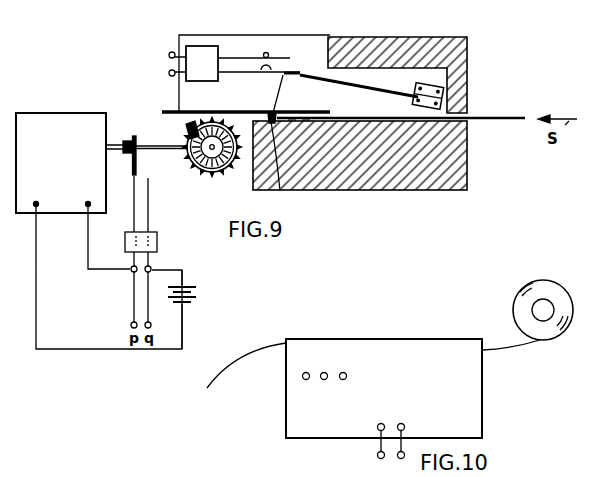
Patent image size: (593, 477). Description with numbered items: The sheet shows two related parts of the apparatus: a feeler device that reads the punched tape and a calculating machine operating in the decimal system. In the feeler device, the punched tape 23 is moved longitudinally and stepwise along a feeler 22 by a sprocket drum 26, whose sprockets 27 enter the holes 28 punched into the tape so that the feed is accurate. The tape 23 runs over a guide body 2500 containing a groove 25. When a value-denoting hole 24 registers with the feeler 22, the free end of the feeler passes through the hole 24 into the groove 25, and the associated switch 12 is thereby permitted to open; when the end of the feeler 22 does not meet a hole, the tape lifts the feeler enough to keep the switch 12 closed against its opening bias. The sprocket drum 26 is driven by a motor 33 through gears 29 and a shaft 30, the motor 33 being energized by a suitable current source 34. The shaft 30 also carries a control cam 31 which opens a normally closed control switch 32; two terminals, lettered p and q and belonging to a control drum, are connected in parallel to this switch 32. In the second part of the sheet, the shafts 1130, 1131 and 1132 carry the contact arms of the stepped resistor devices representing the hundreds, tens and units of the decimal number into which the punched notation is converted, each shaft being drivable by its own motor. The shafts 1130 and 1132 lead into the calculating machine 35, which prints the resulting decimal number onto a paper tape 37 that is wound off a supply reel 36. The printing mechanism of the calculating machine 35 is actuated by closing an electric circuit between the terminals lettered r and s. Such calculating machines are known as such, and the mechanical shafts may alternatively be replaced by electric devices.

In FIG. 9, the switch 12 is at (219, 46).
In FIG. 9, the feeler 22 is at (318, 76).
In FIG. 9, the tape 23 is at (401, 109).
In FIG. 9, the value-denoting hole 24 is at (277, 117).
In FIG. 9, the groove 25 is at (279, 191).
In FIG. 9, the guide body 2500 is at (383, 188).
In FIG. 9, the sprocket drum 26 is at (212, 165).
In FIG. 9, the sprockets 27 is at (208, 160).
In FIG. 9, the holes 28 is at (186, 109).
In FIG. 9, the gears 29 is at (192, 137).
In FIG. 9, the shaft 30 is at (147, 155).
In FIG. 9, the control cam 31 is at (133, 163).
In FIG. 9, the control switch 32 is at (157, 243).
In FIG. 9, the motor 33 is at (44, 113).
In FIG. 9, the current source 34 is at (197, 296).
In FIG. 10, the calculating machine 35 is at (440, 339).
In FIG. 10, the supply reel 36 is at (514, 318).
In FIG. 10, the paper tape 37 is at (270, 343).
In FIG. 10, the shaft 1130 is at (302, 378).
In FIG. 10, the shaft 1131 is at (321, 380).
In FIG. 10, the shaft 1132 is at (344, 372).